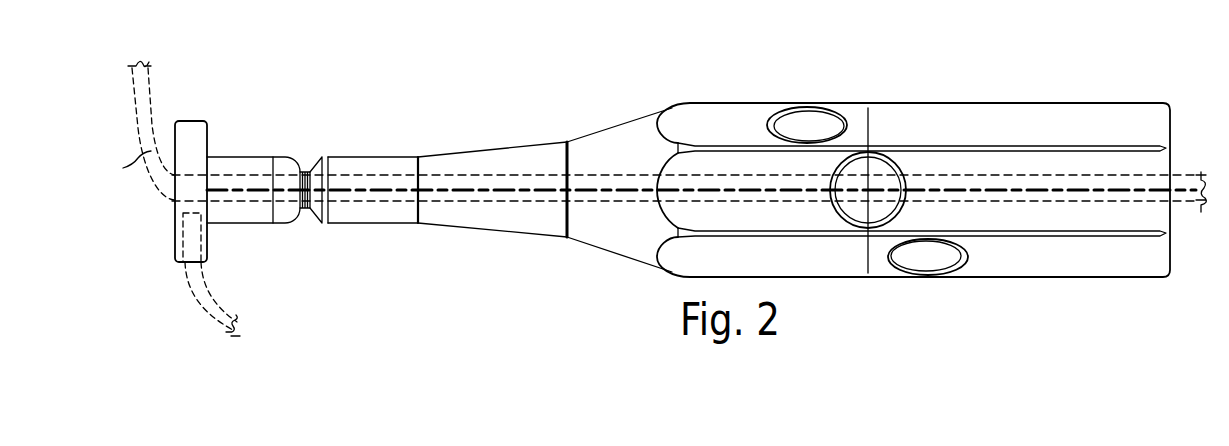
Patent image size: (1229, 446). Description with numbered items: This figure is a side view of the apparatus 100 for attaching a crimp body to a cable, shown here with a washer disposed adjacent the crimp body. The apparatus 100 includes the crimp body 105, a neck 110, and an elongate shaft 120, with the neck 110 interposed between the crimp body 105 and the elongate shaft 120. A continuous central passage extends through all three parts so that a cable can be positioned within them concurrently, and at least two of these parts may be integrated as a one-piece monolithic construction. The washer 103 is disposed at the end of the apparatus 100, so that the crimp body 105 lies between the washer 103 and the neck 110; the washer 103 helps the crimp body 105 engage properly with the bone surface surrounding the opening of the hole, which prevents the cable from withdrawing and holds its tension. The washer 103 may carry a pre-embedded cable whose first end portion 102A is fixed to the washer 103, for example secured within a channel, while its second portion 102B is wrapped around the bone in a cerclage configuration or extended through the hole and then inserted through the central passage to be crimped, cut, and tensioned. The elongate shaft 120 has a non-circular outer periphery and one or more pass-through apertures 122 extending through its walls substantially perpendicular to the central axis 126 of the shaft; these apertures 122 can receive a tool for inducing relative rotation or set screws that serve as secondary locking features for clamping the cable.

The apparatus 100 is at (228, 57).
The first end portion of pre-embedded cable 102A is at (202, 247).
The second portion of cable 102B is at (1196, 131).
The washer 103 is at (195, 128).
The crimp body 105 is at (247, 146).
The neck 110 is at (310, 156).
The elongate shaft 120 is at (558, 122).
The pass-through apertures 122 is at (920, 252).
The central axis 126 is at (1063, 190).